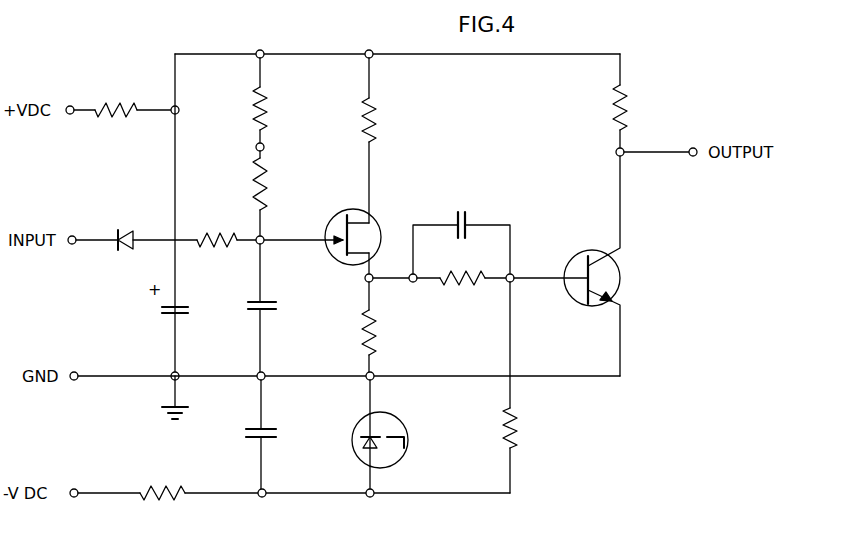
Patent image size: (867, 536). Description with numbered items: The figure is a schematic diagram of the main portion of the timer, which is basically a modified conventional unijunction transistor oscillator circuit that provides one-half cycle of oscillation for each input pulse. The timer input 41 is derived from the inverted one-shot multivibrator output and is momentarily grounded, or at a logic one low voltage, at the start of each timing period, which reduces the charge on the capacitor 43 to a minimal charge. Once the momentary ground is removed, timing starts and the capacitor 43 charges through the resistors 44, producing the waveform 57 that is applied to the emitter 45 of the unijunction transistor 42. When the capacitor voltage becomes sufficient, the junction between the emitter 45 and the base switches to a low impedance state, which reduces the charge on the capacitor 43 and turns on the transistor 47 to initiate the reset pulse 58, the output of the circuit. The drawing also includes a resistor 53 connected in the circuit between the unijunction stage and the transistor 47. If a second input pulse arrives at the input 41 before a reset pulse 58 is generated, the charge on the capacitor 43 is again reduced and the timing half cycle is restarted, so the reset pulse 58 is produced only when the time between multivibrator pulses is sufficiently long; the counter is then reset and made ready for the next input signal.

The timer input 41 is at (75, 232).
The unijunction transistor 42 is at (338, 210).
The capacitor 43 is at (280, 303).
The resistors 44 is at (248, 118).
The emitter 45 is at (356, 258).
The transistor 47 is at (571, 306).
The resistor 53 is at (460, 290).
The waveform 57 is at (263, 237).
The reset pulse 58 is at (694, 148).